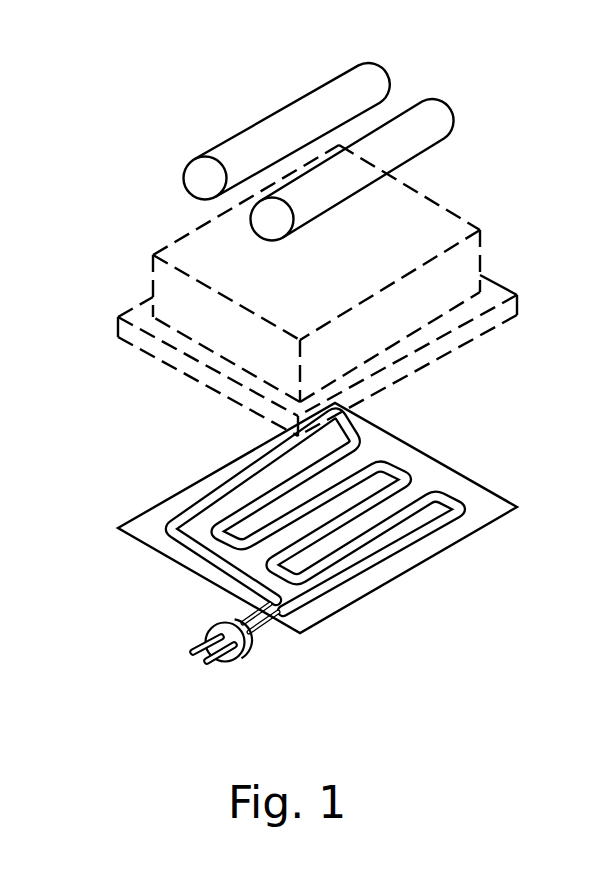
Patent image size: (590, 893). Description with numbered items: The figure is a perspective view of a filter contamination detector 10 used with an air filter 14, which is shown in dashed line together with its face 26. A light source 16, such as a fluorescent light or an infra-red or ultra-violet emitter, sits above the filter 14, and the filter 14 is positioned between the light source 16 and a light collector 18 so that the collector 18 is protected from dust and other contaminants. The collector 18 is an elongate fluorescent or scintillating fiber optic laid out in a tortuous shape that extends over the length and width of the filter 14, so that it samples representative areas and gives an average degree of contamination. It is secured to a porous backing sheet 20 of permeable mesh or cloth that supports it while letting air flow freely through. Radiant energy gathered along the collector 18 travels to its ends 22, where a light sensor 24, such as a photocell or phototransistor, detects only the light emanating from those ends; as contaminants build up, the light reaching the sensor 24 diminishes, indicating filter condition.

The filter contamination detector 10 is at (300, 359).
The air filter 14 is at (392, 221).
The light source 16 is at (357, 88).
The light collector 18 is at (407, 462).
The porous backing sheet 20 is at (488, 512).
The collector ends 22 is at (268, 615).
The light sensor 24 is at (207, 620).
The face of the filter 26 is at (312, 281).